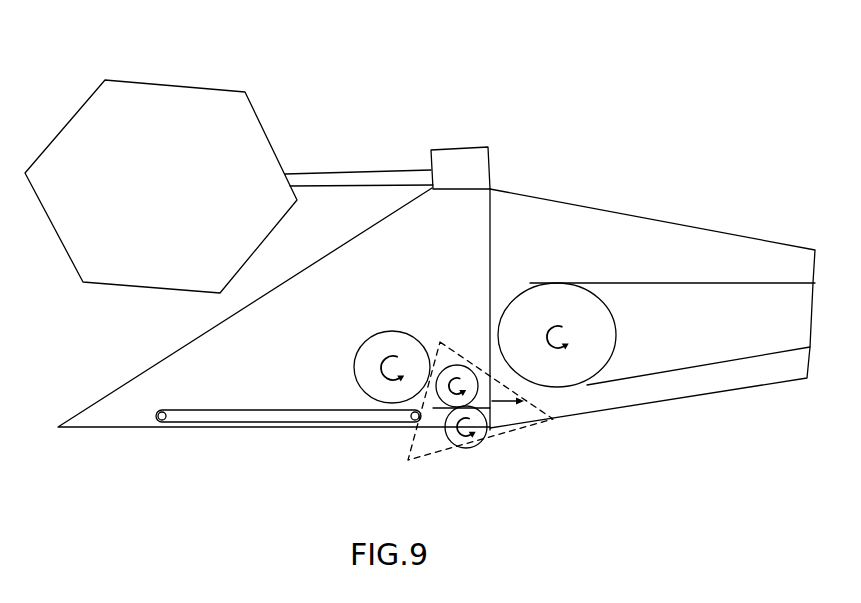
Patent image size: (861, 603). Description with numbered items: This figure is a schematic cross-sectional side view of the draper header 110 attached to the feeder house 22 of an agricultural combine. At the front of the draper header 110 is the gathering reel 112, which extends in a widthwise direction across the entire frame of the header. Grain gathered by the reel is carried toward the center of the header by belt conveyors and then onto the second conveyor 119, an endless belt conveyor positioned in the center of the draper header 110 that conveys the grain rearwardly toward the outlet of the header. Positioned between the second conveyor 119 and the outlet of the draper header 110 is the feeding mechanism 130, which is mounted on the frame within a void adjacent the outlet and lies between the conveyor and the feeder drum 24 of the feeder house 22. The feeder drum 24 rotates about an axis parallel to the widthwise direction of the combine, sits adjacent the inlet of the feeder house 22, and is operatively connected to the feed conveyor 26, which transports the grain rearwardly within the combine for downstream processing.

The draper header 110 is at (341, 103).
The gathering reel 112 is at (160, 82).
The feeder house 22 is at (610, 212).
The feed conveyor 26 is at (692, 283).
The feeder drum 24 is at (533, 283).
The second conveyor 119 is at (245, 410).
The feeding mechanism 130 is at (484, 458).